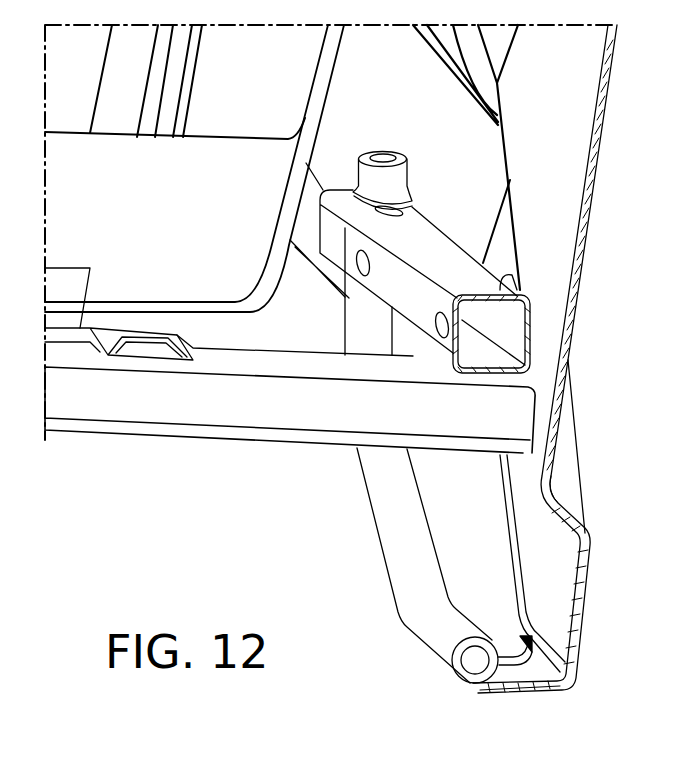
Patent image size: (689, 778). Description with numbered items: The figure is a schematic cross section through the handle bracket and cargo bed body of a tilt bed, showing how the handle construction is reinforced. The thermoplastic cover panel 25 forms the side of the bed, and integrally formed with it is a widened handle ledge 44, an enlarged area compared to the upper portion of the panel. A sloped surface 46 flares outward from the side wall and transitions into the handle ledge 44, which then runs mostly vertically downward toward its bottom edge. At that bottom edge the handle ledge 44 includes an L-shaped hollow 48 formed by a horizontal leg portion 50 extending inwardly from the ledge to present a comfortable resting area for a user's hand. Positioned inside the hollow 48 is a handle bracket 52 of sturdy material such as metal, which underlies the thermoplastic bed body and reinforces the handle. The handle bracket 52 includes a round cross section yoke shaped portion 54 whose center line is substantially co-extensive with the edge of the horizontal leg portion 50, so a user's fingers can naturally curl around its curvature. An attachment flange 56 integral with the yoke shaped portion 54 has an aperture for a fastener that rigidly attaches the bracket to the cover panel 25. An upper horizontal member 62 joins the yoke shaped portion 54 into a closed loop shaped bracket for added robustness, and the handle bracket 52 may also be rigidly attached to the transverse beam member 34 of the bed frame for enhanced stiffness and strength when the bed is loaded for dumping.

The cover panel 25 is at (588, 220).
The transverse beam member 34 is at (193, 407).
The handle ledge 44 is at (585, 591).
The sloped surface 46 is at (568, 493).
The L-shaped hollow 48 is at (493, 595).
The horizontal leg portion 50 is at (537, 693).
The handle bracket 52 is at (348, 473).
The yoke shaped portion 54 is at (400, 540).
The attachment flange 56 is at (513, 668).
The upper horizontal member 62 is at (443, 245).